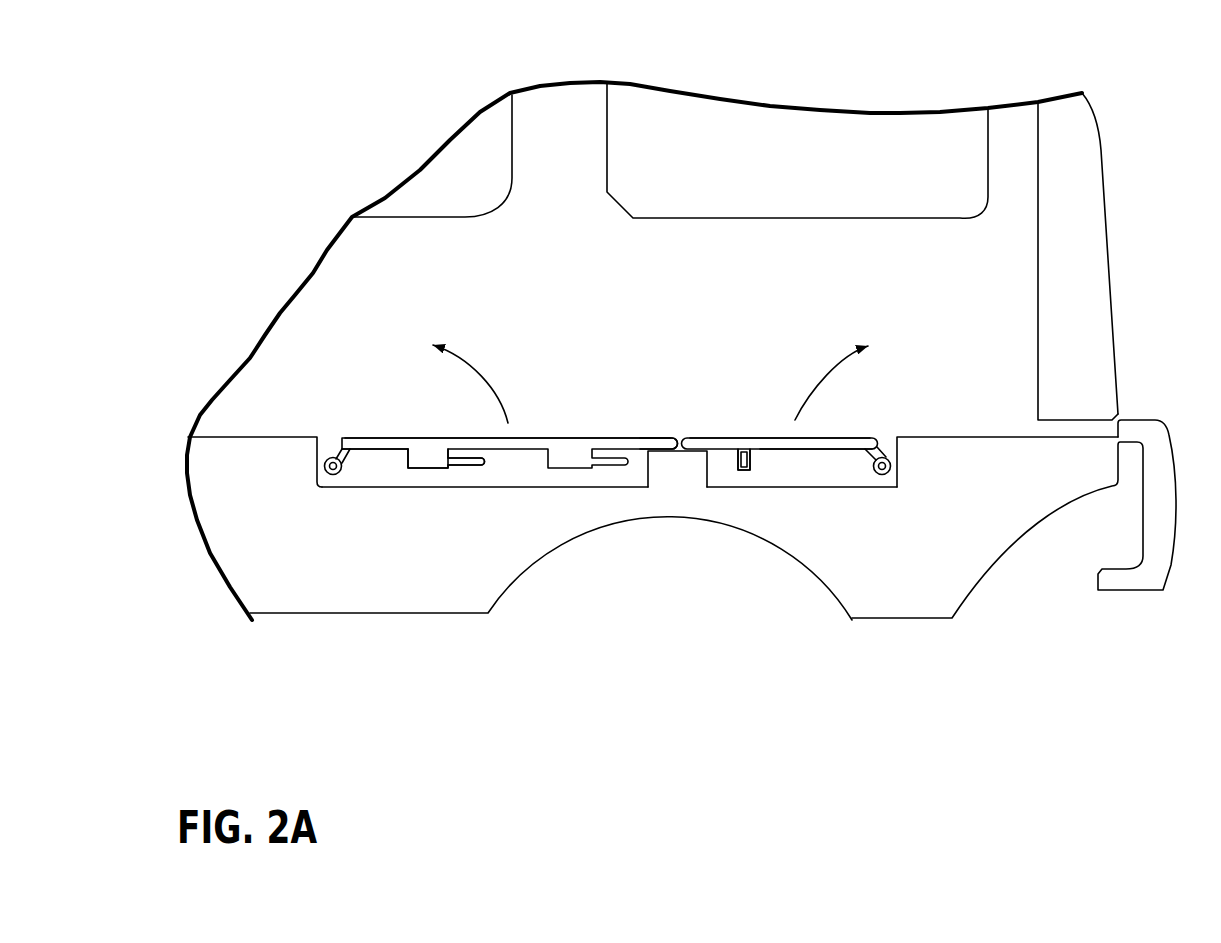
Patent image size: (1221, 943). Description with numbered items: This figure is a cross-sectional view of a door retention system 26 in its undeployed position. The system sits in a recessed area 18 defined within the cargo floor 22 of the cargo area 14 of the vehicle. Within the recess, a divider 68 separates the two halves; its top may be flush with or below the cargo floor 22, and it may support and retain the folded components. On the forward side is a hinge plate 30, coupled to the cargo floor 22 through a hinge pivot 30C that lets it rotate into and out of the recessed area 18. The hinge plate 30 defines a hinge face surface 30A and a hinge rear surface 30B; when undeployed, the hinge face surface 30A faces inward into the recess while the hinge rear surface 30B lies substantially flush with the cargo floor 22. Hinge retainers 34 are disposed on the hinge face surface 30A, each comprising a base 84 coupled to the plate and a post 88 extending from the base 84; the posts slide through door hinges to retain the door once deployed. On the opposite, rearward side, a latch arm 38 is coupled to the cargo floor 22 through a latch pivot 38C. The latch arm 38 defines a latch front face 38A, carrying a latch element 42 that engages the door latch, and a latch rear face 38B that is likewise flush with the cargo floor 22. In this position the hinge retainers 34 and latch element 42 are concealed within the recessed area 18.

The cargo area 14 is at (990, 277).
The recessed area 18 is at (534, 488).
The cargo floor 22 is at (267, 437).
The door retention system 26 is at (606, 385).
The hinge plate 30 is at (436, 483).
The hinge face surface 30A is at (637, 452).
The hinge rear surface 30B is at (427, 437).
The hinge pivot 30C is at (329, 458).
The hinge retainer 34 is at (399, 474).
The latch arm 38 is at (863, 490).
The latch front face 38A is at (840, 450).
The latch rear face 38B is at (845, 437).
The latch pivot 38C is at (885, 475).
The latch element 42 is at (747, 467).
The divider 68 is at (667, 473).
The base 84 is at (428, 458).
The post 88 is at (463, 468).